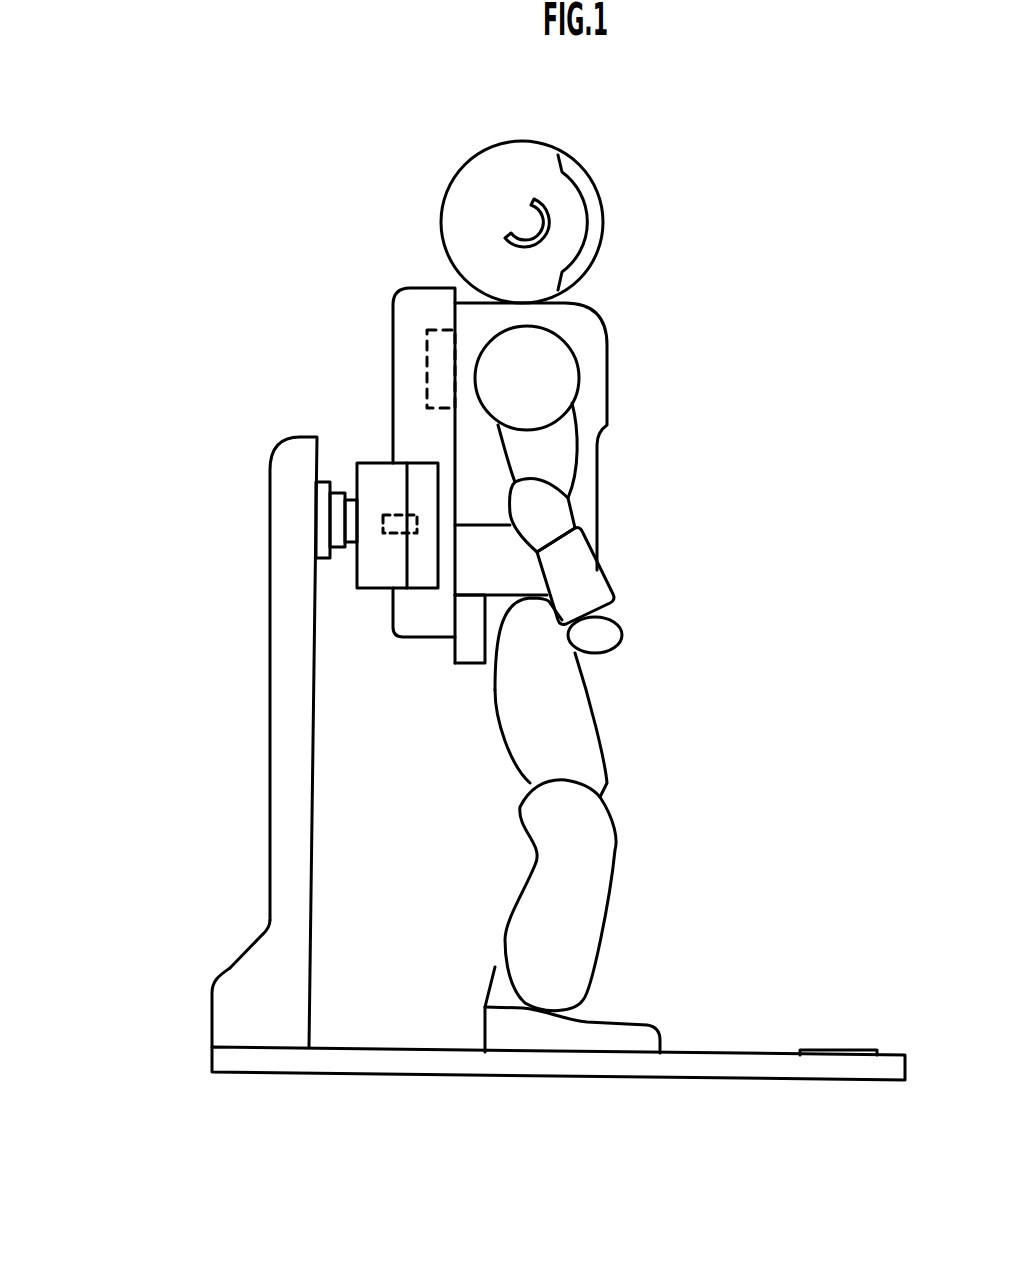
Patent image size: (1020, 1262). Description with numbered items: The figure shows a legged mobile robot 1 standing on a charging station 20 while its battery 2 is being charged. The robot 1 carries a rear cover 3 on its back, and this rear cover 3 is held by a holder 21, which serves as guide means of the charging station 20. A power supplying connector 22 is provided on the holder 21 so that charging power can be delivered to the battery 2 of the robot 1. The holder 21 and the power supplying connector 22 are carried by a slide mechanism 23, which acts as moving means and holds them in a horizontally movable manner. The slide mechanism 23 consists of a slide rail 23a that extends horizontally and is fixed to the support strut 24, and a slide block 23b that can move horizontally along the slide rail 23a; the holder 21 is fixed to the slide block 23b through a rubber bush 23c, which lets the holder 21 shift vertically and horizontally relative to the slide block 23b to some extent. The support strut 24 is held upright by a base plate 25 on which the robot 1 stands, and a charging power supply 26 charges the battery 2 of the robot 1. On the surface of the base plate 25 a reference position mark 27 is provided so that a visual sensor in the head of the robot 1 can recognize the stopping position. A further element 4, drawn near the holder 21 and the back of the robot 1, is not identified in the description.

The legged mobile robot 1 is at (648, 188).
The battery 2 is at (437, 330).
The rear cover 3 is at (397, 307).
The connecting part 4 is at (412, 517).
The charging station 20 is at (481, 743).
The holder 21 is at (369, 457).
The power supplying connector 22 is at (383, 533).
The slide mechanism 23 is at (319, 519).
The slide rail 23a is at (333, 517).
The slide block 23b is at (330, 485).
The rubber bush 23c is at (357, 497).
The support strut 24 is at (277, 742).
The base plate 25 is at (383, 1073).
The charging power supply 26 is at (227, 972).
The reference position mark 27 is at (852, 1050).